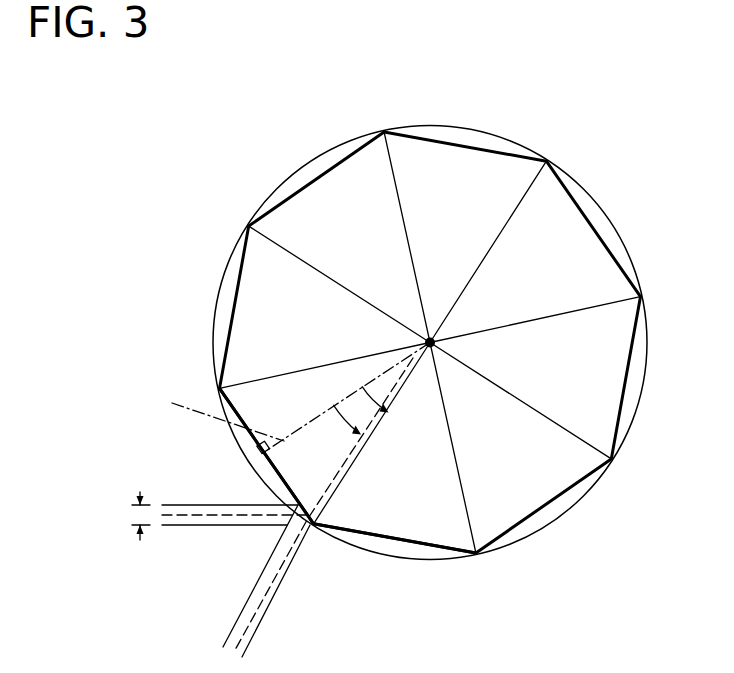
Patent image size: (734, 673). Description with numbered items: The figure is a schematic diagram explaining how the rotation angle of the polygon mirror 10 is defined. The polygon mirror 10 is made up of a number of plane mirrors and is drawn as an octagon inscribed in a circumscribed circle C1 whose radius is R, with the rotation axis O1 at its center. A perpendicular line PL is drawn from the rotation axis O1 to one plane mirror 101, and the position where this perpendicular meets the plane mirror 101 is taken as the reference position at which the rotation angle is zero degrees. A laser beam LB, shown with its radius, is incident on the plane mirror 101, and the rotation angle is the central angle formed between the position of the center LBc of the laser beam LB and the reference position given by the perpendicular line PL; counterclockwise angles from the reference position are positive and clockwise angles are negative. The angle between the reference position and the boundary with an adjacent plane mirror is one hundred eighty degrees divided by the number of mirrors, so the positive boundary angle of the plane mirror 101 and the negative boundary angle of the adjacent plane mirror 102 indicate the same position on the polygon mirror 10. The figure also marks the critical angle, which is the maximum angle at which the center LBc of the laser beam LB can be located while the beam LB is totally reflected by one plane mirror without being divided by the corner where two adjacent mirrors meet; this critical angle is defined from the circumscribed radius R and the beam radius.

The polygon mirror 10 is at (588, 212).
The circumscribed circle C1 is at (483, 132).
The rotation axis O1 is at (436, 337).
The radius of circumscribed circle R is at (427, 339).
The plane mirror 101 is at (252, 443).
The plane mirror 102 is at (399, 541).
The perpendicular line PL is at (282, 398).
The laser beam LB is at (200, 525).
The center of the laser beam LBc is at (232, 515).